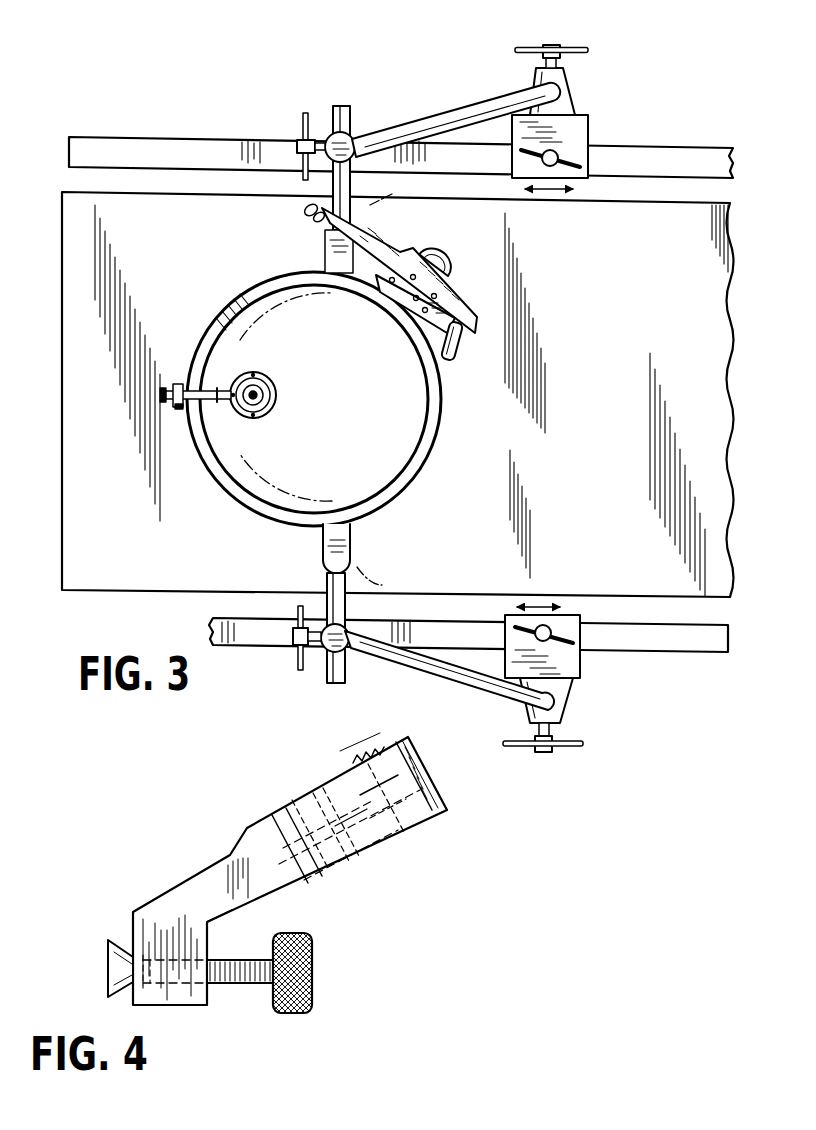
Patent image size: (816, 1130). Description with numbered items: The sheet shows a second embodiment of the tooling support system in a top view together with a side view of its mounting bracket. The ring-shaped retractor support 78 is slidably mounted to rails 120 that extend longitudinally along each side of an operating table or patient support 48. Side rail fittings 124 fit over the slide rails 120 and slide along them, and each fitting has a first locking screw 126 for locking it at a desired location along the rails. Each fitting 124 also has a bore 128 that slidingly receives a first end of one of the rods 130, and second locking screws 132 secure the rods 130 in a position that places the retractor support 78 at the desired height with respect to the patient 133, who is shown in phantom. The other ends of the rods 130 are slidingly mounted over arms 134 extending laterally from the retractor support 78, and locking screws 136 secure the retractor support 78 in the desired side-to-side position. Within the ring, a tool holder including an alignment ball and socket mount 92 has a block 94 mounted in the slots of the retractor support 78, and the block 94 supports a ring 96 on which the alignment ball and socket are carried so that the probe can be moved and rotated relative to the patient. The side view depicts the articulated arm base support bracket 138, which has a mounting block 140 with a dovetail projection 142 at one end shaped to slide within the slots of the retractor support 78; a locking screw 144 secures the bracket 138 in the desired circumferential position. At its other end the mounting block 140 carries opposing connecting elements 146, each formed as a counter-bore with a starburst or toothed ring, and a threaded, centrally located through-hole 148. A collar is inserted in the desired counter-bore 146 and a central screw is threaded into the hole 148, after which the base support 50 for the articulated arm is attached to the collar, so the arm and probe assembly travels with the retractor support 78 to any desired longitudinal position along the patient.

In FIG. 3, the patient support 48 is at (398, 394).
In FIG. 3, the base support 50 is at (470, 304).
In FIG. 3, the retractor support 78 is at (233, 292).
In FIG. 3, the alignment ball and socket mount 92 is at (280, 369).
In FIG. 3, the block 94 is at (177, 383).
In FIG. 3, the ring 96 is at (278, 405).
In FIG. 3, the rails 120 is at (693, 147).
In FIG. 3, the side rail fittings 124 is at (593, 125).
In FIG. 3, the first locking screws 126 is at (558, 167).
In FIG. 3, the bore 128 is at (555, 97).
In FIG. 3, the rods 130 is at (472, 100).
In FIG. 3, the second locking screws 132 is at (547, 44).
In FIG. 3, the patient 133 is at (269, 466).
In FIG. 3, the arms 134 is at (336, 110).
In FIG. 3, the locking screws 136 is at (300, 140).
In FIG. 3, the articulated arm base support bracket 138 is at (440, 242).
In FIG. 4, the articulated arm base support bracket 138 is at (132, 858).
In FIG. 4, the mounting block 140 is at (178, 1007).
In FIG. 4, the dovetail projection 142 is at (108, 968).
In FIG. 4, the locking screw 144 is at (312, 968).
In FIG. 4, the connecting elements 146 is at (284, 805).
In FIG. 4, the threaded through-hole 148 is at (370, 856).